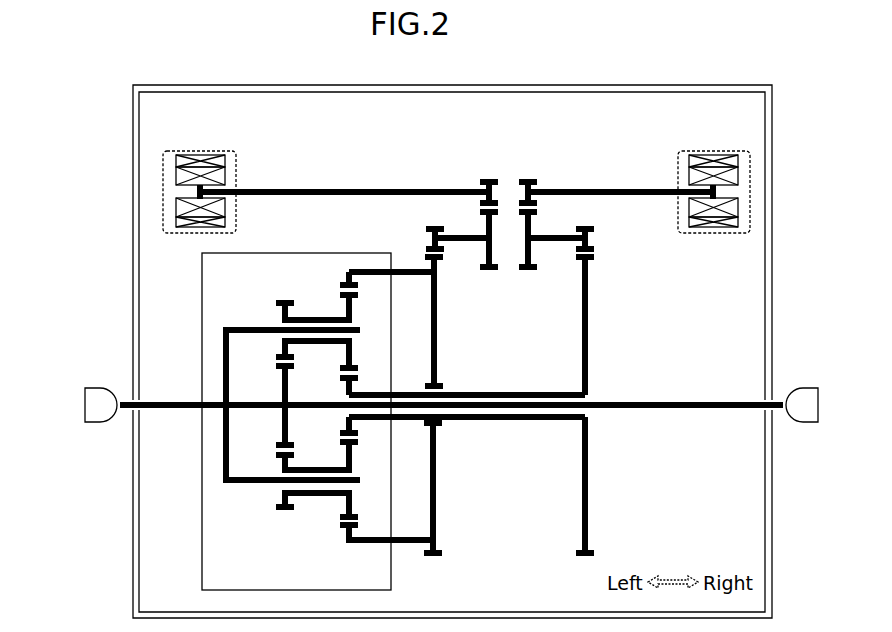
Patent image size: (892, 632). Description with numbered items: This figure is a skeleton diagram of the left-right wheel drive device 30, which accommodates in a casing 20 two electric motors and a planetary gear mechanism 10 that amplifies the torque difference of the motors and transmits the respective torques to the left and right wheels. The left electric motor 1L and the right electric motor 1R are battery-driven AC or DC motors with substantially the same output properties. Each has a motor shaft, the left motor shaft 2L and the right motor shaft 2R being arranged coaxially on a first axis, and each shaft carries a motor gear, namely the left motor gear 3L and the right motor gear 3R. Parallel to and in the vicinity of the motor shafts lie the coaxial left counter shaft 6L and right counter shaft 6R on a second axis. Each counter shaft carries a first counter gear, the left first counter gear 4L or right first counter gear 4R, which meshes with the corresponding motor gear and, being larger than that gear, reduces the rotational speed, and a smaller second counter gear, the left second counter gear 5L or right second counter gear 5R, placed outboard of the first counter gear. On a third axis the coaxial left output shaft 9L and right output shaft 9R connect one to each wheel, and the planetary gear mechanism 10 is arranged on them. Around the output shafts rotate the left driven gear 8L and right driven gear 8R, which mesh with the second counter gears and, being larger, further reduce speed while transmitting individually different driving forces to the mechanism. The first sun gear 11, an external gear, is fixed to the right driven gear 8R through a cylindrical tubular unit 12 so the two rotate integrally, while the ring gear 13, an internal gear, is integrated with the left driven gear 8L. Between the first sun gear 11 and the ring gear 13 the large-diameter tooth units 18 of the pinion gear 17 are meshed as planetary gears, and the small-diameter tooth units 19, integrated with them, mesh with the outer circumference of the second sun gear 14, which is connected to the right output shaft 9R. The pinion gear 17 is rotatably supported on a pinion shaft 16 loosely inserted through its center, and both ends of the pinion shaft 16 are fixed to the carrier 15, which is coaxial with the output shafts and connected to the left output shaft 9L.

The left-right wheel drive device 30 is at (108, 114).
The casing 20 is at (131, 226).
The left electric motor 1L is at (213, 150).
The right electric motor 1R is at (714, 150).
The left motor shaft 2L is at (340, 190).
The right motor shaft 2R is at (634, 190).
The left motor gear 3L is at (490, 179).
The right motor gear 3R is at (530, 179).
The left first counter gear 4L is at (490, 271).
The right first counter gear 4R is at (530, 271).
The left second counter gear 5L is at (427, 226).
The right second counter gear 5R is at (593, 226).
The left counter shaft 6L is at (456, 235).
The right counter shaft 6R is at (561, 235).
The left driven gear 8L is at (441, 268).
The right driven gear 8R is at (594, 262).
The left output shaft 9L is at (177, 400).
The right output shaft 9R is at (632, 410).
The planetary gear mechanism 10 is at (201, 292).
The first sun gear 11 is at (343, 381).
The tubular unit 12 is at (537, 392).
The ring gear 13 is at (340, 287).
The second sun gear 14 is at (279, 366).
The carrier 15 is at (229, 432).
The pinion shaft 16 is at (235, 483).
The pinion gear 17 is at (314, 495).
The large-diameter tooth units 18 is at (340, 522).
The small-diameter tooth units 19 is at (284, 510).